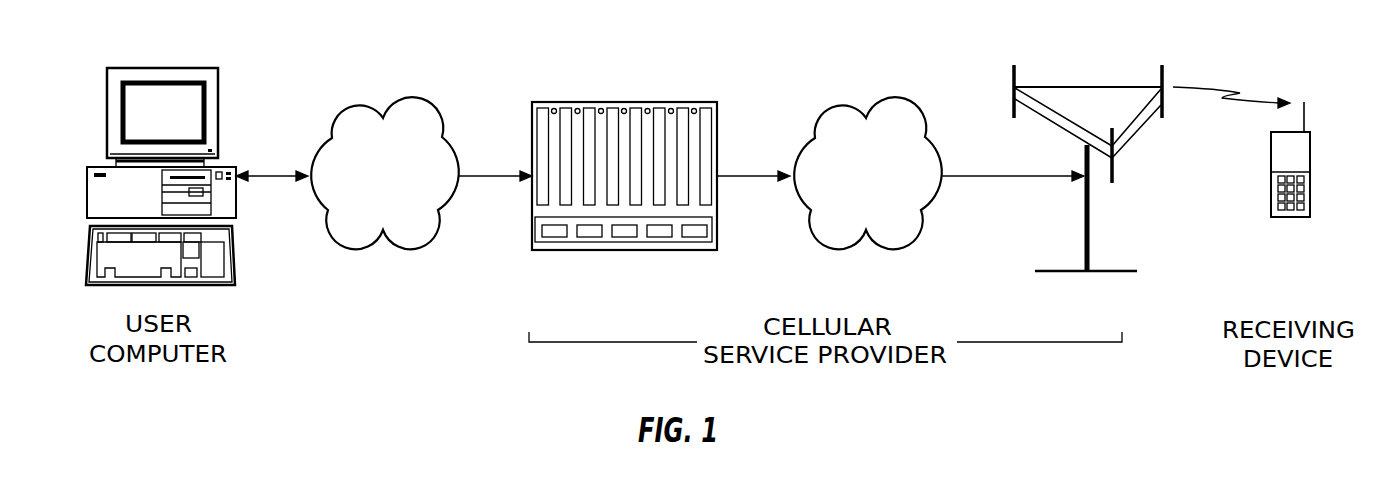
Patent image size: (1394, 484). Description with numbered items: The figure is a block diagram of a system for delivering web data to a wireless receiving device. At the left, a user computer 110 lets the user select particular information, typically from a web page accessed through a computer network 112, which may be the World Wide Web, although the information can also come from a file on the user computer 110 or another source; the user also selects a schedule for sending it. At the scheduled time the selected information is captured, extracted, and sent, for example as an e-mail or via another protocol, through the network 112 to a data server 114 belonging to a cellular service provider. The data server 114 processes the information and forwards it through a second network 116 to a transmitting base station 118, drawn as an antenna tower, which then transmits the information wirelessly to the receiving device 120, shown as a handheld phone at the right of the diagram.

The user computer 110 is at (157, 67).
The computer network 112 is at (368, 100).
The data server 114 is at (622, 101).
The network 116 is at (851, 100).
The transmitting base station 118 is at (1073, 87).
The receiving device 120 is at (1312, 168).